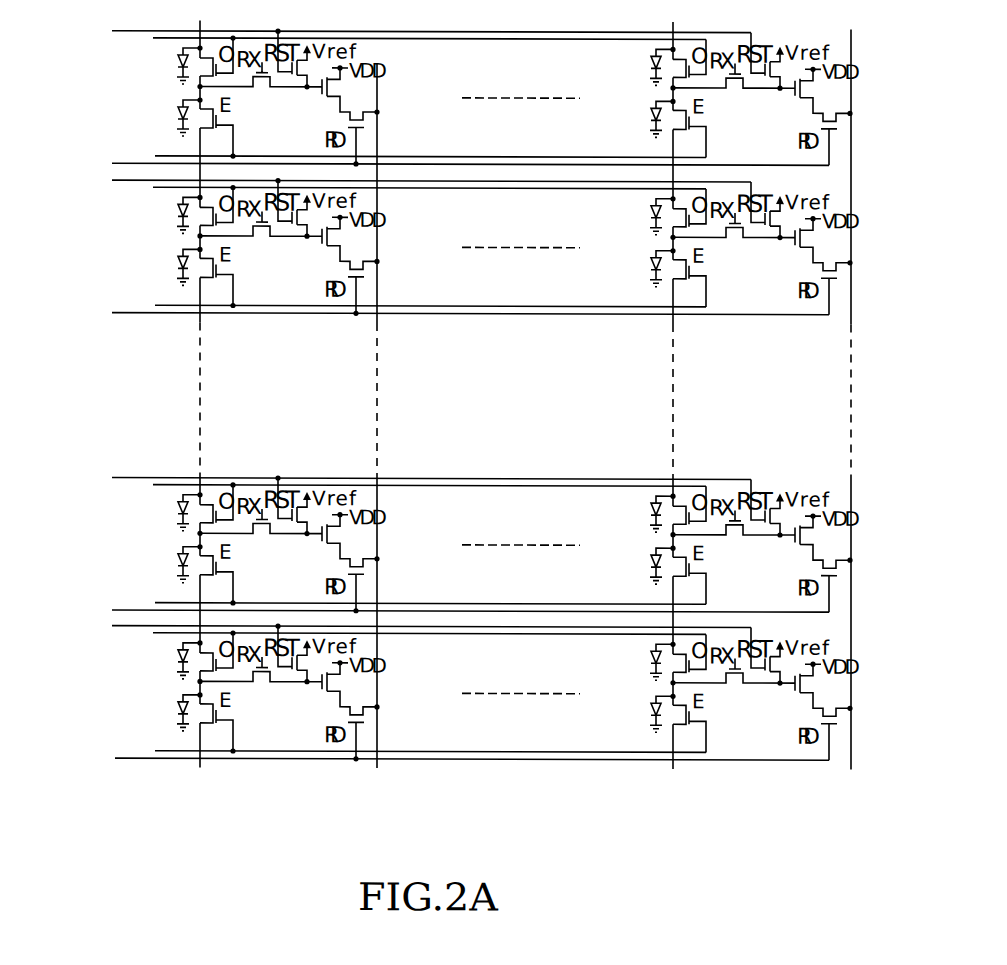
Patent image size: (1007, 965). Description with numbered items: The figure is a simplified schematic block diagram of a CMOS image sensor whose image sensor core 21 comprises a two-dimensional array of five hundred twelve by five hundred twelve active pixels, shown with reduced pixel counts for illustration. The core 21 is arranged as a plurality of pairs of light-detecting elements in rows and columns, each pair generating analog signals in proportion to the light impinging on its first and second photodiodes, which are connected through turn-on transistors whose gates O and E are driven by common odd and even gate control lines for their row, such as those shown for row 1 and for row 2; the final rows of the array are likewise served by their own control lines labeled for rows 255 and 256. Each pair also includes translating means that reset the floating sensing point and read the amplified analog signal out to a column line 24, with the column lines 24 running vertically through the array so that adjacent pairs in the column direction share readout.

The image sensor core 21 is at (456, 430).
The column line 24 is at (380, 277).
The row 1 control lines (RST1, Og1, Eg1, RD1) 1 is at (442, 93).
The row 2 control lines (RST2, Og2, Eg2, RD2) 2 is at (445, 247).
The row 255 control lines 255 is at (433, 544).
The row 256 control lines 256 is at (432, 700).